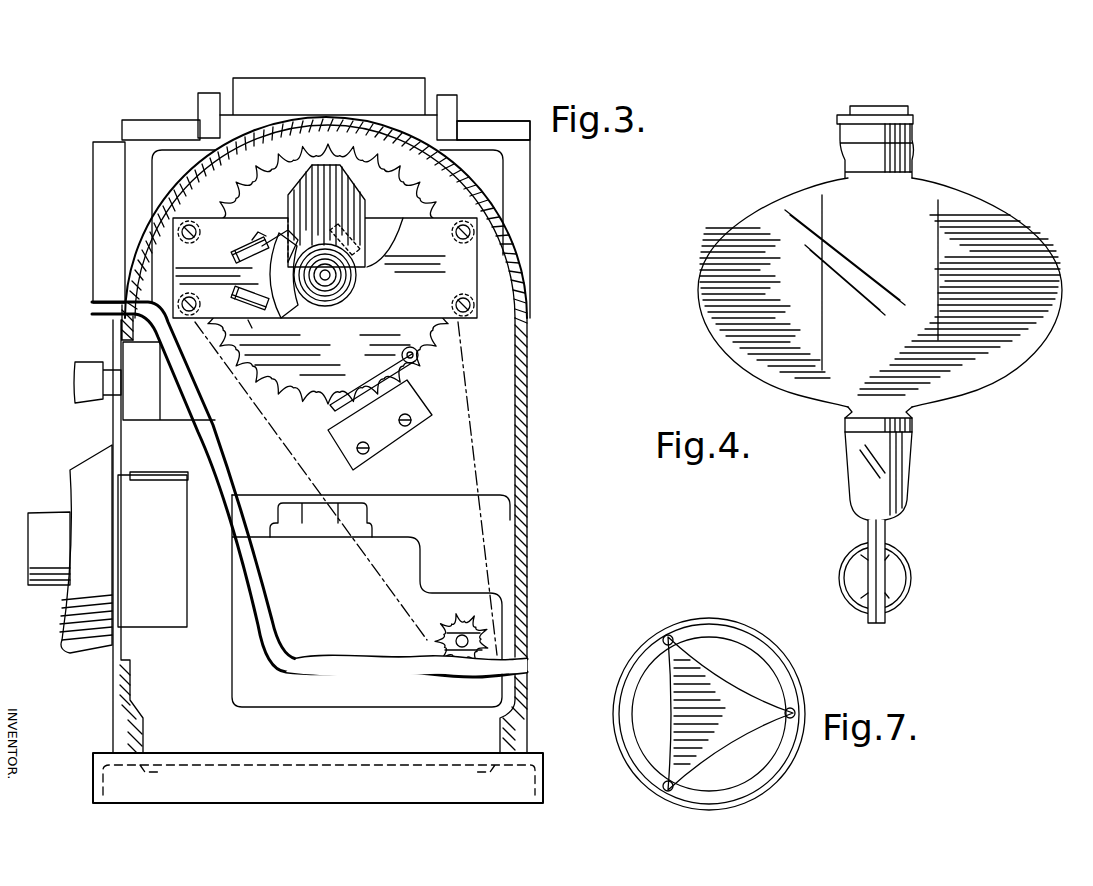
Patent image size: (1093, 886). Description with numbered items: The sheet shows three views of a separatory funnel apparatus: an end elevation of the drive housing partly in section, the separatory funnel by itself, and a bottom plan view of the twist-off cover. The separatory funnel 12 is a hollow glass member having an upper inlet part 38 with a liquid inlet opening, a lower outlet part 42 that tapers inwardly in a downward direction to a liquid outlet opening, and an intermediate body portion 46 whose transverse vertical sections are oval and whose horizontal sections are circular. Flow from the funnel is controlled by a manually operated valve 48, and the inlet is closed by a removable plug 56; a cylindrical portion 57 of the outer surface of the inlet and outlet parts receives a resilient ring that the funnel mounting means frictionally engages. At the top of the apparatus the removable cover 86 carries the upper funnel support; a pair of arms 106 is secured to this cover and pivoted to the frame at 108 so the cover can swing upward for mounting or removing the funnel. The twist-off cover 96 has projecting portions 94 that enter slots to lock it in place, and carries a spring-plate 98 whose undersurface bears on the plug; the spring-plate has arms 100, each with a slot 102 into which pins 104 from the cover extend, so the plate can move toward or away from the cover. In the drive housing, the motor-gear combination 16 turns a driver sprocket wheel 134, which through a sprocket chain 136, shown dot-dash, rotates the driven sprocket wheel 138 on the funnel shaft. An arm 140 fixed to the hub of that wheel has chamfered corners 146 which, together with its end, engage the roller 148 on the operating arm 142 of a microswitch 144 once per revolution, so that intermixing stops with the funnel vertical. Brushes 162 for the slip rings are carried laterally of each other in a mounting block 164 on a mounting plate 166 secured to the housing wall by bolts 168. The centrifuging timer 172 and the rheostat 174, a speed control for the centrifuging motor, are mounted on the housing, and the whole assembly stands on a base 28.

In FIG. 4, the separatory funnel 12 is at (885, 290).
In FIG. 3, the motor-gear combination 16 is at (420, 545).
In FIG. 3, the base 28 is at (538, 752).
In FIG. 4, the upper inlet part 38 is at (918, 146).
In FIG. 4, the lower outlet part 42 is at (912, 472).
In FIG. 4, the intermediate body portion 46 is at (1030, 245).
In FIG. 4, the manually operated valve 48 is at (908, 594).
In FIG. 4, the removable plug 56 is at (905, 106).
In FIG. 4, the cylindrical portion 57 is at (916, 160).
In FIG. 3, the removable cover 86 is at (519, 128).
In FIG. 7, the projecting portions 94 is at (712, 618).
In FIG. 3, the twist-off cover 96 is at (303, 80).
In FIG. 7, the twist-off cover 96 is at (790, 663).
In FIG. 7, the spring-plate 98 is at (738, 722).
In FIG. 7, the arms 100 is at (680, 786).
In FIG. 7, the slot 102 is at (663, 790).
In FIG. 7, the pins 104 is at (665, 634).
In FIG. 3, the arms 106 is at (202, 100).
In FIG. 3, the pivot 108 is at (466, 121).
In FIG. 3, the driver sprocket wheel 134 is at (529, 420).
In FIG. 3, the sprocket chain 136 is at (472, 434).
In FIG. 3, the driven sprocket wheel 138 is at (430, 193).
In FIG. 3, the arm 140 is at (366, 209).
In FIG. 3, the operating arm 142 is at (418, 379).
In FIG. 3, the microswitch 144 is at (395, 444).
In FIG. 3, the chamfered corners 146 is at (300, 182).
In FIG. 3, the roller 148 is at (403, 352).
In FIG. 3, the brushes 162 is at (262, 244).
In FIG. 3, the mounting block 164 is at (344, 301).
In FIG. 3, the mounting plate 166 is at (474, 276).
In FIG. 3, the bolts 168 is at (476, 300).
In FIG. 3, the timer 172 is at (44, 586).
In FIG. 3, the rheostat 174 is at (92, 405).